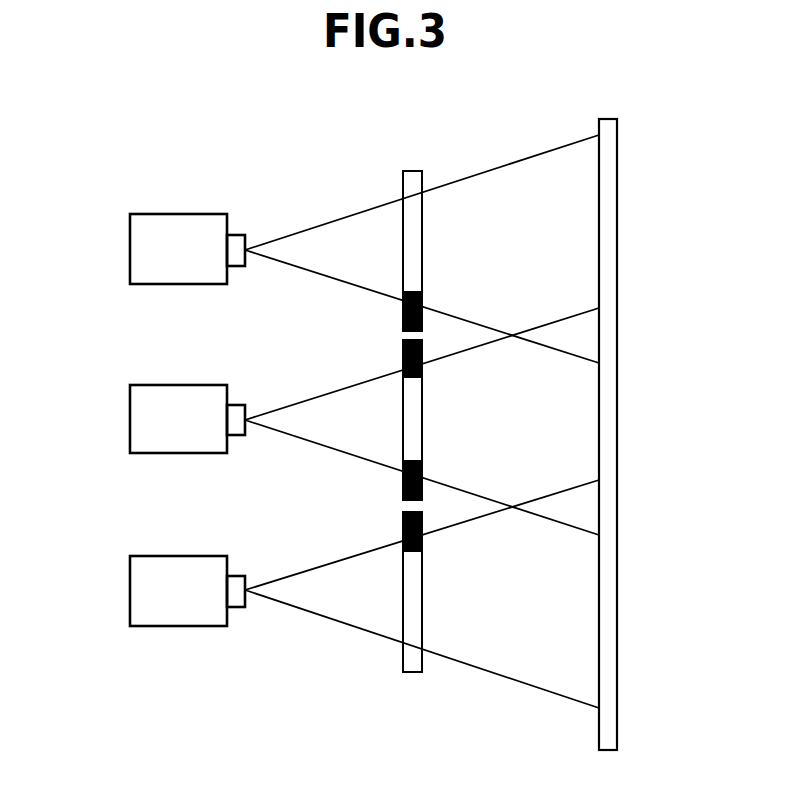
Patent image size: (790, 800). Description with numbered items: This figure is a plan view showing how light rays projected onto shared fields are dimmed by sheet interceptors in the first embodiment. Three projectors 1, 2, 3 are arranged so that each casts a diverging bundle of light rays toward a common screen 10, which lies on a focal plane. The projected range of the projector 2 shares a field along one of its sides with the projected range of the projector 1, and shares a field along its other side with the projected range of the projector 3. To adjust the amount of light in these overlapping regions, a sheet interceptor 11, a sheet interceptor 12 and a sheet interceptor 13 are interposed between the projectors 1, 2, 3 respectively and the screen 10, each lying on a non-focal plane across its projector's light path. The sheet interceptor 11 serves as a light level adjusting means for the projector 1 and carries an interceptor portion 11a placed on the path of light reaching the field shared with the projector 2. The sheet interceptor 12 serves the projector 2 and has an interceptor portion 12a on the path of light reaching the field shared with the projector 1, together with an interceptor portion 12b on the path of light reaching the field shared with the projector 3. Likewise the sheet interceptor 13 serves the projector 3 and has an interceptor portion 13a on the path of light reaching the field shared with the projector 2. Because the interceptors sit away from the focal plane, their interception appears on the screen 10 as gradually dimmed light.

The projector 1 is at (140, 589).
The projector 2 is at (140, 418).
The projector 3 is at (140, 246).
The screen 10 is at (617, 181).
The sheet interceptor 11 is at (412, 608).
The interceptor portion 11a is at (421, 543).
The sheet interceptor 12 is at (412, 423).
The interceptor portion 12a is at (421, 474).
The interceptor portion 12b is at (421, 368).
The sheet interceptor 13 is at (413, 170).
The interceptor portion 13a is at (403, 318).